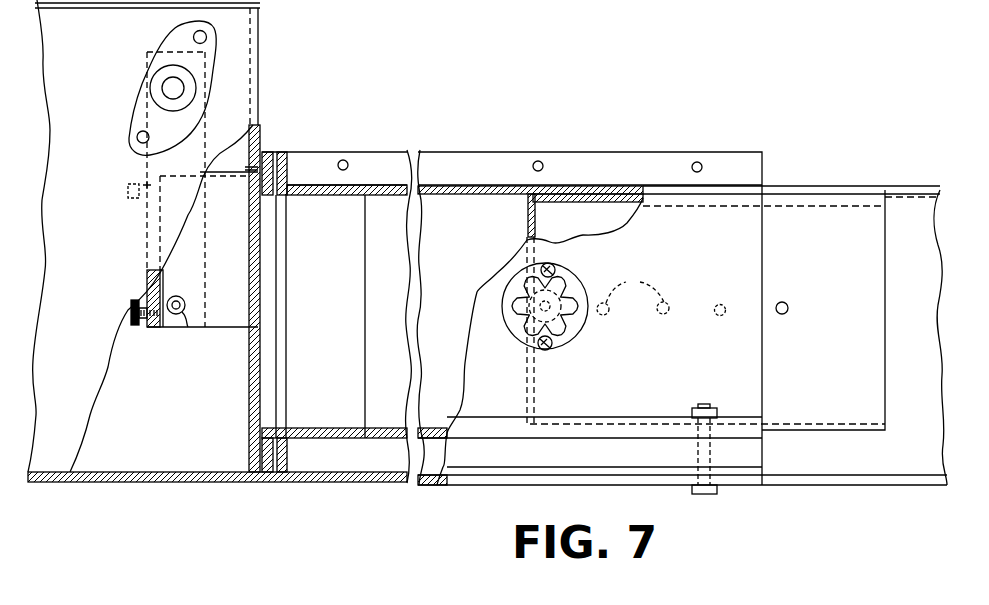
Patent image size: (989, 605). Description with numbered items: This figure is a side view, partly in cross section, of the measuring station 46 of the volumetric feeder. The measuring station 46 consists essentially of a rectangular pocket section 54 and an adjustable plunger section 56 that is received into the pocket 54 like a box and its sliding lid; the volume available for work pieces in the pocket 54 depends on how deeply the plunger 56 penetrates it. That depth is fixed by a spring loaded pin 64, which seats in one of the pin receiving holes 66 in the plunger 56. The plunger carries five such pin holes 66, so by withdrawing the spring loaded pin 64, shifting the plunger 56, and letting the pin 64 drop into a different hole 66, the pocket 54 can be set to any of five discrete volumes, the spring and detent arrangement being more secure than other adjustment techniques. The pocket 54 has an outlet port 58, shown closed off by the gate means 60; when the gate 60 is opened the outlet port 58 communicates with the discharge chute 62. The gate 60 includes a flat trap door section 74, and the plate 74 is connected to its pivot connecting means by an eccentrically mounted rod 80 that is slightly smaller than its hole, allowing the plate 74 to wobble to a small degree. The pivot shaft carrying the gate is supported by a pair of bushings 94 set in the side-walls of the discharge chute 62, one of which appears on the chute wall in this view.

The measuring station 46 is at (523, 152).
The pocket section 54 is at (462, 307).
The plunger section 56 is at (597, 227).
The outlet port 58 is at (270, 270).
The gate means 60 is at (231, 330).
The discharge chute 62 is at (101, 188).
The spring loaded pin 64 is at (567, 298).
The pin receiving holes 66 is at (782, 302).
The flat trap door section 74 is at (258, 362).
The eccentrically mounted rod 80 is at (190, 320).
The bushings 94 is at (172, 43).